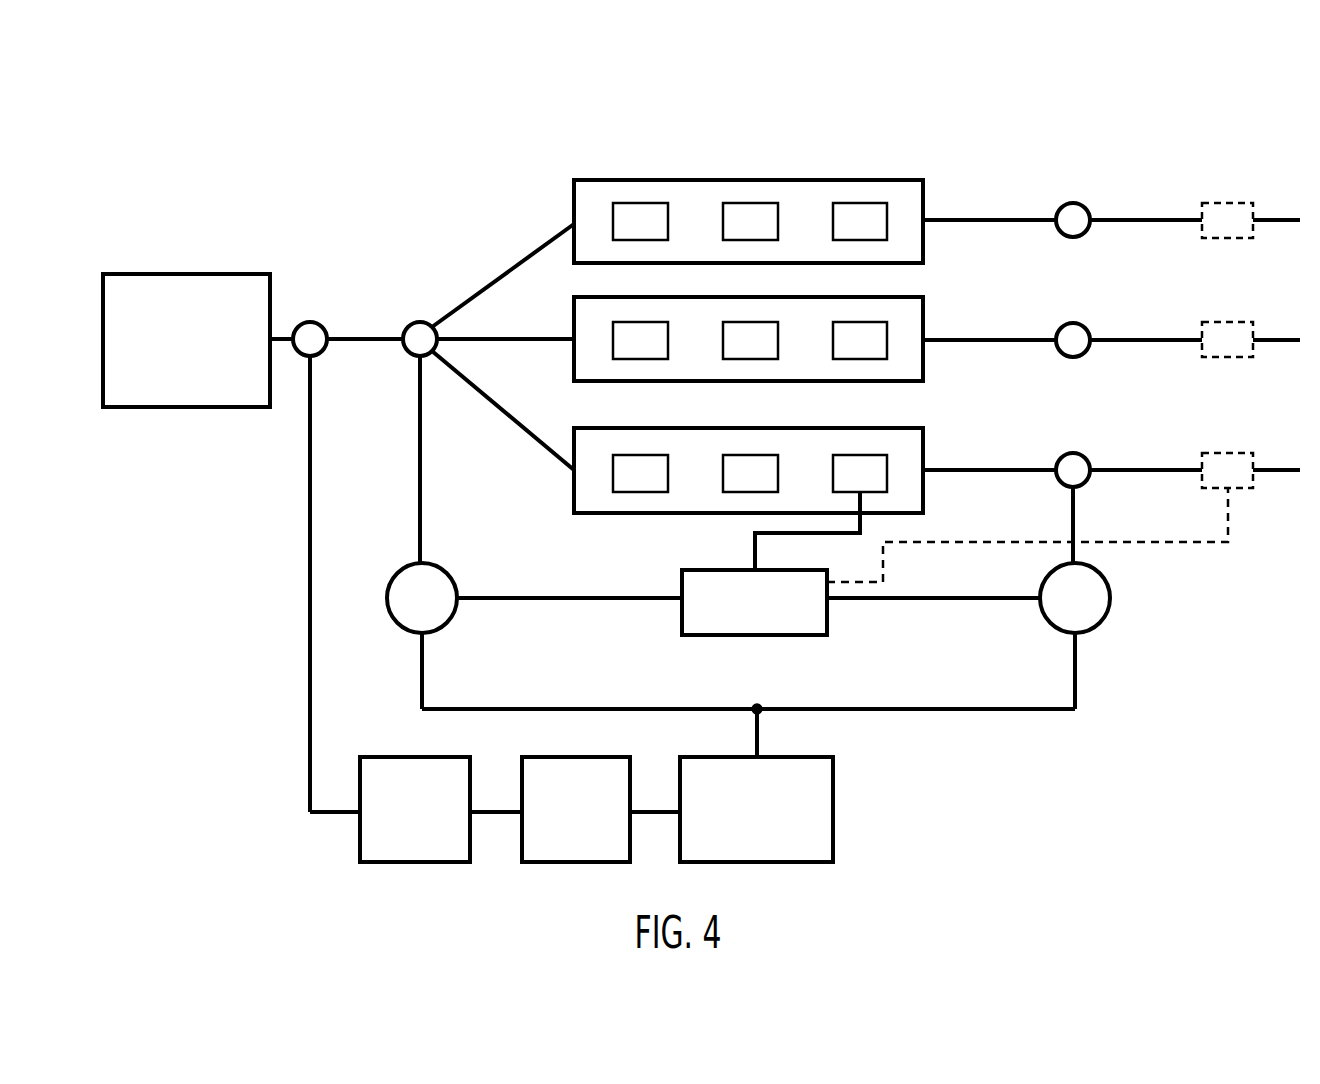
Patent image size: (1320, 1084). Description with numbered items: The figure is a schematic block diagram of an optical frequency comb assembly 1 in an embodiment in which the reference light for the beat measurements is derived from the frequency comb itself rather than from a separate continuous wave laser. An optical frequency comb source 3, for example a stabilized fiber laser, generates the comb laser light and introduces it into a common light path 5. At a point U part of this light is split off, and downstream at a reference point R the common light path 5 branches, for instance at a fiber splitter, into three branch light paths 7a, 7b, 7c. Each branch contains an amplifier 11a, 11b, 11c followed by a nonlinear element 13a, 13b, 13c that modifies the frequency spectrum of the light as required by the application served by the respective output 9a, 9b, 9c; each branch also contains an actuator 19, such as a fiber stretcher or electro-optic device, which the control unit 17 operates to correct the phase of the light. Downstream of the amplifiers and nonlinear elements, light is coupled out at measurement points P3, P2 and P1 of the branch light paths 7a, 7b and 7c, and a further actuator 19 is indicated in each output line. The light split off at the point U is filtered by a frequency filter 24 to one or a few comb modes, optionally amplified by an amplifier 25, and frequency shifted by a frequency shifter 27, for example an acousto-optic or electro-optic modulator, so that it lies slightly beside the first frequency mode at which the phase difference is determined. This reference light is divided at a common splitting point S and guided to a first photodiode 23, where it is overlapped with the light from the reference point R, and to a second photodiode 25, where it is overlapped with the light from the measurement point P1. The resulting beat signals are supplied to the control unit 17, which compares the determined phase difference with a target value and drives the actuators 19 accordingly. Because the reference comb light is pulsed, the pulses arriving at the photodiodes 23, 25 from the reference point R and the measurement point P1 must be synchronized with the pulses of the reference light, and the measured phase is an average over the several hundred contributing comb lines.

The optical frequency comb assembly 1 is at (1005, 99).
The optical frequency comb source 3 is at (176, 355).
The common light path 5 is at (358, 336).
The branch light path 7a is at (484, 275).
The branch light path 7b is at (523, 330).
The branch light path 7c is at (509, 404).
The output 9a is at (1280, 218).
The output 9b is at (1280, 338).
The output 9c is at (1280, 468).
The amplifier 11a is at (640, 221).
The amplifier 11b is at (640, 340).
The amplifier 11c is at (640, 473).
The nonlinear element 13a is at (750, 221).
The nonlinear element 13b is at (750, 340).
The nonlinear element 13c is at (750, 473).
The control unit 17 is at (741, 617).
The actuator 19 is at (1043, 347).
The first photodiode 23 is at (408, 613).
The frequency filter 24 is at (401, 824).
The second photodiode / amplifier 25 is at (1061, 613).
The frequency shifter 27 is at (742, 824).
The splitting point U is at (311, 333).
The reference point R is at (417, 332).
The common splitting point S is at (759, 708).
The measurement point P1 is at (1083, 482).
The measurement point P2 is at (1083, 352).
The measurement point P3 is at (1083, 232).